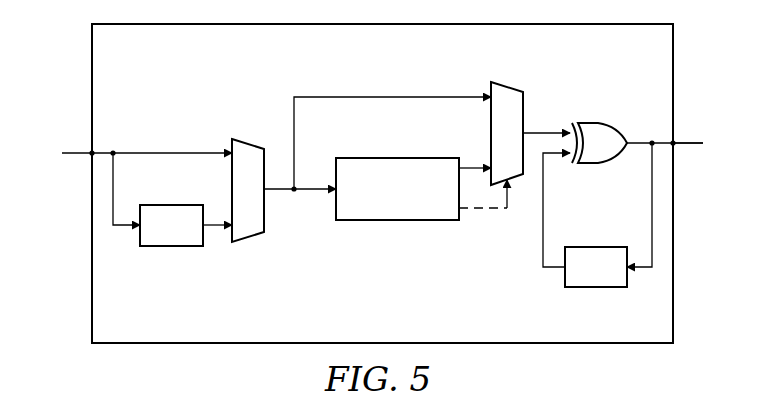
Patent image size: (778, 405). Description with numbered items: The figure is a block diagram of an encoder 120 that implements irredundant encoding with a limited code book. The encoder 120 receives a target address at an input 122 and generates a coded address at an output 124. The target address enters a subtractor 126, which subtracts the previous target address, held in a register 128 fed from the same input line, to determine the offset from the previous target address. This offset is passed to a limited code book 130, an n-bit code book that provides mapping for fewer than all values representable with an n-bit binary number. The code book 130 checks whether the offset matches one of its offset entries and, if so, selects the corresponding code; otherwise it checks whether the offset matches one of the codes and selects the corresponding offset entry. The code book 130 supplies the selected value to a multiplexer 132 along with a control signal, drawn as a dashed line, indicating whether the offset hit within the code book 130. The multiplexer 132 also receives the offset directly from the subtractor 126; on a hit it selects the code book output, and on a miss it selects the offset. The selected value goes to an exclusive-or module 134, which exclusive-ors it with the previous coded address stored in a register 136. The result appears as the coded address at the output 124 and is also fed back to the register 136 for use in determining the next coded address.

The encoder 120 is at (208, 343).
The input 122 is at (88, 149).
The output 124 is at (677, 139).
The subtractor 126 is at (256, 145).
The register 128 is at (170, 246).
The limited code book 130 is at (398, 220).
The multiplexer 132 is at (512, 82).
The exclusive-or module 134 is at (590, 121).
The register 136 is at (598, 287).